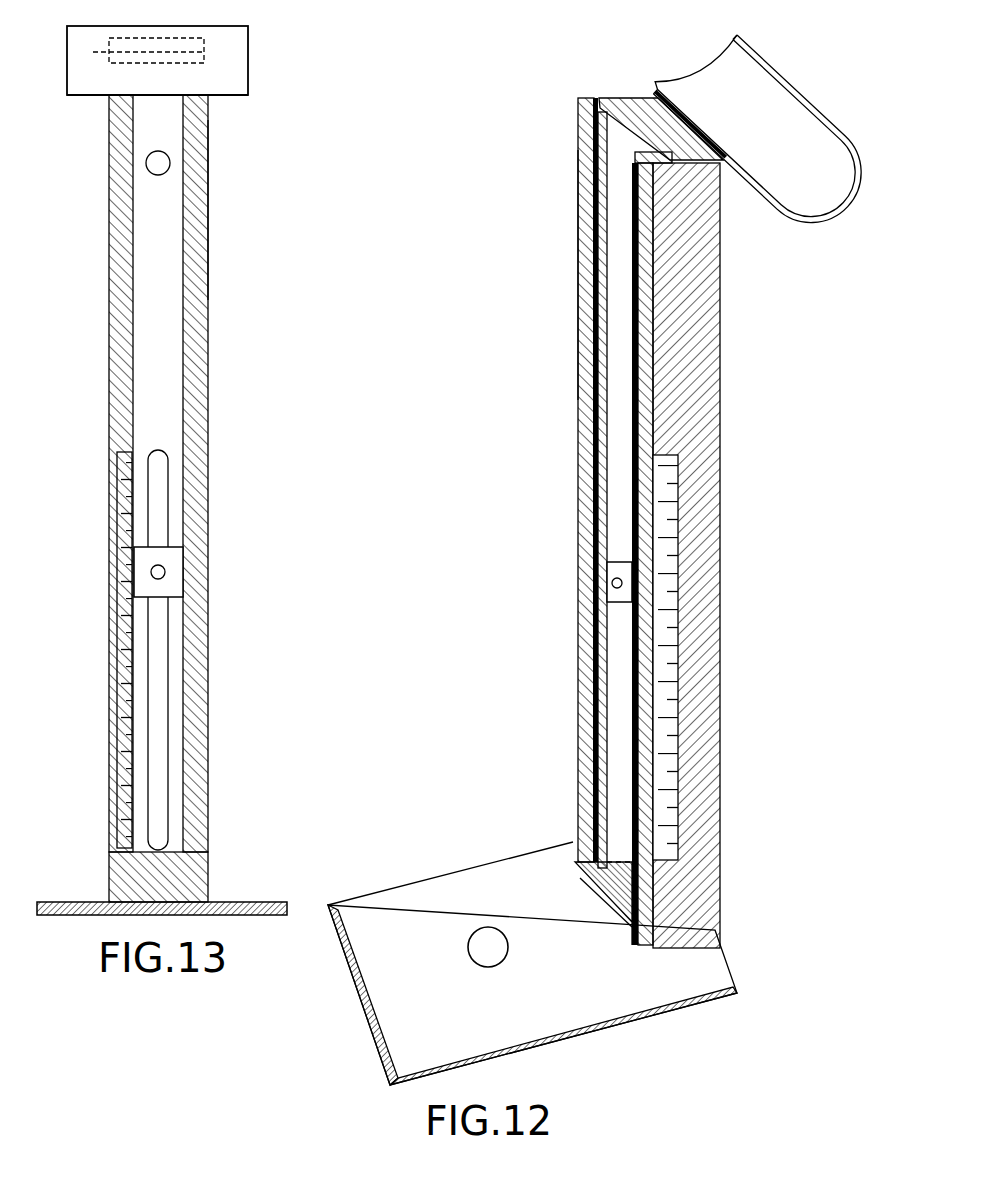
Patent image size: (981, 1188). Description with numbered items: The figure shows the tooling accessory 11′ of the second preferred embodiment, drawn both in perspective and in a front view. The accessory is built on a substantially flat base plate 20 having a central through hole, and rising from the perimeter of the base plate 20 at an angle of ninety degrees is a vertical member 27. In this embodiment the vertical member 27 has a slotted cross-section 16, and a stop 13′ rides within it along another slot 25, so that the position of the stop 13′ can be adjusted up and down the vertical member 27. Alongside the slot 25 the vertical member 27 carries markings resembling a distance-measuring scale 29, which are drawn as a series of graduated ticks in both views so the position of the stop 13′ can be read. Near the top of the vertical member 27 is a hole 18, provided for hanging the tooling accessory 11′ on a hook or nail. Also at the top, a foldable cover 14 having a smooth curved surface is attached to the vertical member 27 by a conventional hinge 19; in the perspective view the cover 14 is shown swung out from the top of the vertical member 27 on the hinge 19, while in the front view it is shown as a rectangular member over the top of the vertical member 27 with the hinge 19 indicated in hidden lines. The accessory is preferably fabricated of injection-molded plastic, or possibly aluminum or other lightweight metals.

In FIG. 13, the tooling accessory 11′ is at (208, 193).
In FIG. 12, the tooling accessory 11′ is at (575, 205).
In FIG. 13, the stop 13′ is at (188, 573).
In FIG. 12, the stop 13′ is at (607, 583).
In FIG. 13, the foldable cover 14 is at (458, 97).
In FIG. 12, the foldable cover 14 is at (578, 98).
In FIG. 13, the slotted cross-section 16 is at (165, 255).
In FIG. 13, the hole 18 is at (170, 163).
In FIG. 13, the hinge 19 is at (204, 48).
In FIG. 12, the hinge 19 is at (642, 92).
In FIG. 13, the base plate 20 is at (393, 870).
In FIG. 12, the base plate 20 is at (532, 963).
In FIG. 13, the slot 25 is at (162, 663).
In FIG. 12, the vertical member 27 is at (578, 175).
In FIG. 13, the distance-measuring scale 29 is at (113, 633).
In FIG. 12, the distance-measuring scale 29 is at (667, 745).